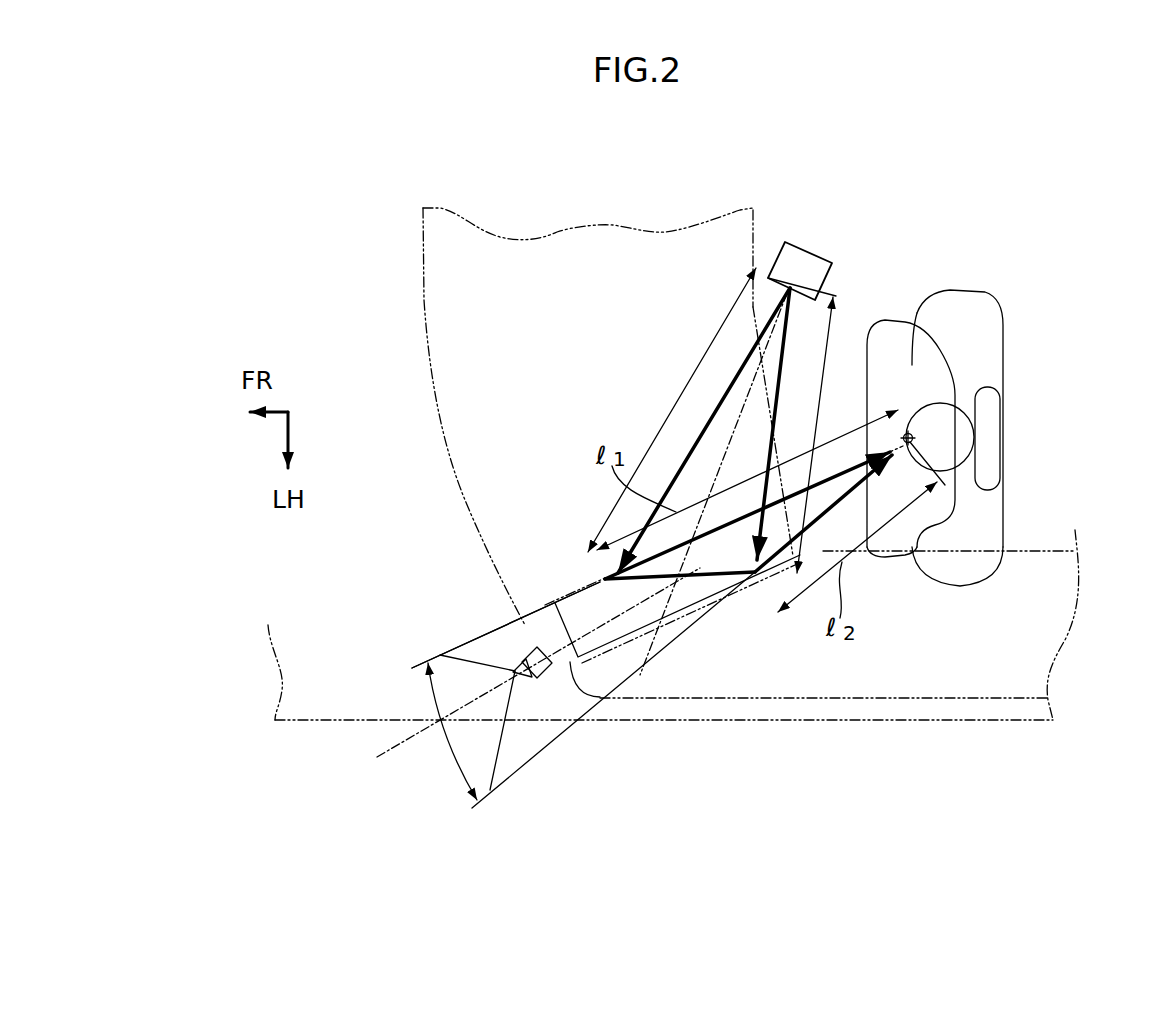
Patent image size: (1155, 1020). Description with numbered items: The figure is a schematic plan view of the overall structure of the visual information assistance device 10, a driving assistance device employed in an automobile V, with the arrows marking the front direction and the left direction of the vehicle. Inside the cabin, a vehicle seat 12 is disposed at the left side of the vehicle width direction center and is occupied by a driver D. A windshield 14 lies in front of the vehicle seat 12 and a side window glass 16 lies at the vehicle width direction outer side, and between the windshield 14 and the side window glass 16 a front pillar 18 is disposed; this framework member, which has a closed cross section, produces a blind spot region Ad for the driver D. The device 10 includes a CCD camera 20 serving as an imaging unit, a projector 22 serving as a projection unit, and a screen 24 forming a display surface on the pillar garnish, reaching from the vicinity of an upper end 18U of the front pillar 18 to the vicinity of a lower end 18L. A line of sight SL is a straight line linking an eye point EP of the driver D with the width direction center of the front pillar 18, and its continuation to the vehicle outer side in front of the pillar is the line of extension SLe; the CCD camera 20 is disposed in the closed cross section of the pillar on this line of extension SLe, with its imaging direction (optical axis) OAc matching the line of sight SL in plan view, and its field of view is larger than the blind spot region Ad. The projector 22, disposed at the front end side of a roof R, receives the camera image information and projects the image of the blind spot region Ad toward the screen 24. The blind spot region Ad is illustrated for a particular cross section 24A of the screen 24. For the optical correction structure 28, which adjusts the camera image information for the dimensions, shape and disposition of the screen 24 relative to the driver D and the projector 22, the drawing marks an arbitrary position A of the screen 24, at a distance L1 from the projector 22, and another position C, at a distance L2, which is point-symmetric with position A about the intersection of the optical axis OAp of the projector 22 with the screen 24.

The visual information assistance device 10 is at (948, 224).
The vehicle seat 12 is at (1022, 360).
The windshield 14 is at (707, 233).
The side window glass 16 is at (947, 673).
The front pillar 18 is at (693, 620).
The upper end of the front pillar 18U is at (838, 372).
The lower end of the front pillar 18L is at (537, 600).
The CCD camera 20 is at (481, 624).
The optical correction structure 28 is at (525, 645).
The projector 22 is at (805, 243).
The screen 24 is at (700, 608).
The cross section of the screen 24A is at (668, 585).
The arbitrary position of the screen A is at (584, 608).
The another position of the screen C is at (767, 633).
The driver D is at (931, 386).
The eye point EP is at (914, 438).
The line of sight SL is at (822, 495).
The line of extension of the line of sight SLe is at (549, 600).
The distance from the projector to position A L1 is at (687, 386).
The distance from the projector to position C L2 is at (830, 432).
The optical axis of the projector OAp is at (723, 473).
The optical axis of camera OAc is at (382, 760).
The blind spot region Ad is at (465, 727).
The roof R is at (748, 228).
The automobile V is at (843, 756).